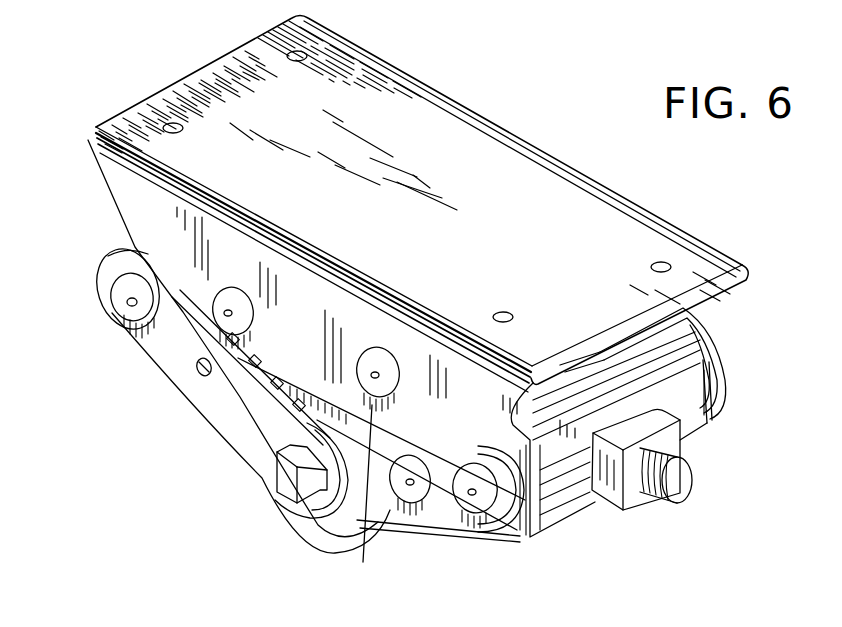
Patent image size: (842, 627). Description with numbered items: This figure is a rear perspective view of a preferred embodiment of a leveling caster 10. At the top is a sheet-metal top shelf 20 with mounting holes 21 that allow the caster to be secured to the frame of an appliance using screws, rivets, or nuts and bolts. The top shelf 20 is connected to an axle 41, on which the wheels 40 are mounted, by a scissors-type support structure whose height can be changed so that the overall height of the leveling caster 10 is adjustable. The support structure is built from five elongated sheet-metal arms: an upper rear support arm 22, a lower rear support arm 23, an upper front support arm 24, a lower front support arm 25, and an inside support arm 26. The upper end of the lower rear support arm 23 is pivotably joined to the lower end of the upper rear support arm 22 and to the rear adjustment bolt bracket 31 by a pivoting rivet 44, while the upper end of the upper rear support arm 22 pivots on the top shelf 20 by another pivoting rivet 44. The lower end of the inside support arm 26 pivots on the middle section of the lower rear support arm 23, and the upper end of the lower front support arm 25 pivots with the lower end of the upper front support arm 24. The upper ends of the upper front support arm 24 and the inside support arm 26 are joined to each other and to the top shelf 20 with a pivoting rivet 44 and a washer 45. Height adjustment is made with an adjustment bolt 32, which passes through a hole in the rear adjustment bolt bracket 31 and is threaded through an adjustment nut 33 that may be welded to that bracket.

The leveling caster 10 is at (493, 110).
The top shelf 20 is at (507, 197).
The mounting holes 21 is at (290, 53).
The upper rear support arm 22 is at (680, 323).
The lower rear support arm 23 is at (735, 440).
The upper front support arm 24 is at (140, 248).
The lower front support arm 25 is at (263, 448).
The inside support arm 26 is at (317, 406).
The rear adjustment bolt bracket 31 is at (562, 497).
The adjustment bolt 32 is at (678, 488).
The adjustment nut 33 is at (632, 510).
The wheels 40 is at (313, 530).
The axle 41 is at (293, 477).
The pivoting rivet 44 is at (227, 313).
The washer 45 is at (240, 350).